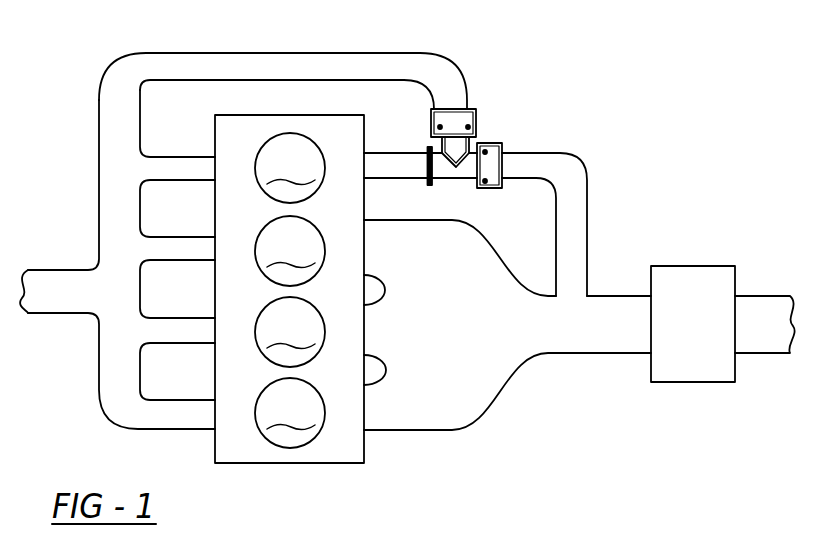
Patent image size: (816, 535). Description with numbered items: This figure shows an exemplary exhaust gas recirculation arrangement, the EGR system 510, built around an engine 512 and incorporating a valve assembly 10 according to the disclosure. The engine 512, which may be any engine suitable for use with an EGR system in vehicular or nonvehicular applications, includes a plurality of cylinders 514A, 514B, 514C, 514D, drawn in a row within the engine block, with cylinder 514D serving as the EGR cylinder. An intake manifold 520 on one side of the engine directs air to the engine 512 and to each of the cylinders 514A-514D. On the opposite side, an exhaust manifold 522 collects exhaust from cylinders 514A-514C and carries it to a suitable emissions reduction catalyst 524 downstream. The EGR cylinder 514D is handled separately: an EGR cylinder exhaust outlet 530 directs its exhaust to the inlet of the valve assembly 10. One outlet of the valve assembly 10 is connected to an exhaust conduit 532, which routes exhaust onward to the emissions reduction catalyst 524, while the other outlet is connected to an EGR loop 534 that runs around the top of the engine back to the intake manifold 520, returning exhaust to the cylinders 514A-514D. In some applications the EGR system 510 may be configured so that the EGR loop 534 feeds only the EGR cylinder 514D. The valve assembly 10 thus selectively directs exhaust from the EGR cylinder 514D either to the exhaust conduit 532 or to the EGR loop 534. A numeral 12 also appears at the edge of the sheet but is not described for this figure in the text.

The EGR system 510 is at (454, 50).
The engine 512 is at (300, 318).
The cylinder 514A is at (290, 413).
The cylinder 514B is at (290, 332).
The cylinder 514C is at (290, 251).
The EGR cylinder 514D is at (290, 168).
The intake manifold 520 is at (118, 348).
The exhaust manifold 522 is at (459, 375).
The emissions reduction catalyst 524 is at (684, 368).
The EGR cylinder exhaust outlet 530 is at (400, 152).
The exhaust conduit 532 is at (589, 248).
The EGR loop 534 is at (127, 78).
The valve assembly 10 is at (489, 128).
The controller 12 is at (645, 532).